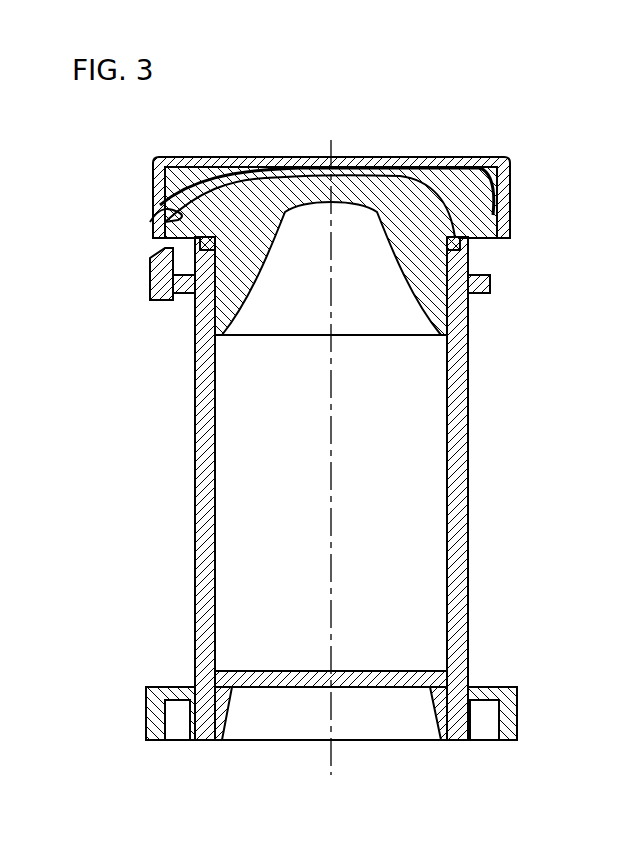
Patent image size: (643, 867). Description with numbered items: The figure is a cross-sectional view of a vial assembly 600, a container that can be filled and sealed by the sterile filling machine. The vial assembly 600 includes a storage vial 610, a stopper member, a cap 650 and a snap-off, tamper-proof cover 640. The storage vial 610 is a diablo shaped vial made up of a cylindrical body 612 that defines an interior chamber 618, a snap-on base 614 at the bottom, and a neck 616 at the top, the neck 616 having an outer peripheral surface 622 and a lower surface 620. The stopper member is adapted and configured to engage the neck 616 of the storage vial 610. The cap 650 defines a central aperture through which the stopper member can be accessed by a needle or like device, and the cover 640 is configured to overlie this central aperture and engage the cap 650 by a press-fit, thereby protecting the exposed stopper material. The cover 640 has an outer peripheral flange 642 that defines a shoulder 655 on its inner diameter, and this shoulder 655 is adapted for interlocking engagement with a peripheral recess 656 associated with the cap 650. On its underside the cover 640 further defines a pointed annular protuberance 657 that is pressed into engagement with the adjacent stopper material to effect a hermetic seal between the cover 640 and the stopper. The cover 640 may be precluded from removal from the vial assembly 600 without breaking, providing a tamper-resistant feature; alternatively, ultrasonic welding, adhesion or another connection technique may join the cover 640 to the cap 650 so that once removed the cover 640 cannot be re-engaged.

The vial assembly 600 is at (330, 210).
The cover 640 is at (512, 170).
The outer peripheral flange 642 is at (512, 212).
The shoulder 655 is at (490, 170).
The pointed annular protuberance 657 is at (250, 180).
The peripheral recess 656 is at (160, 215).
The cap 650 is at (140, 280).
The storage vial 610 is at (350, 488).
The cylindrical body 612 is at (470, 530).
The interior chamber 618 is at (235, 590).
The snap-on base 614 is at (502, 680).
The outer peripheral surface 622 is at (492, 262).
The lower surface 620 is at (184, 300).
The neck 616 is at (478, 305).